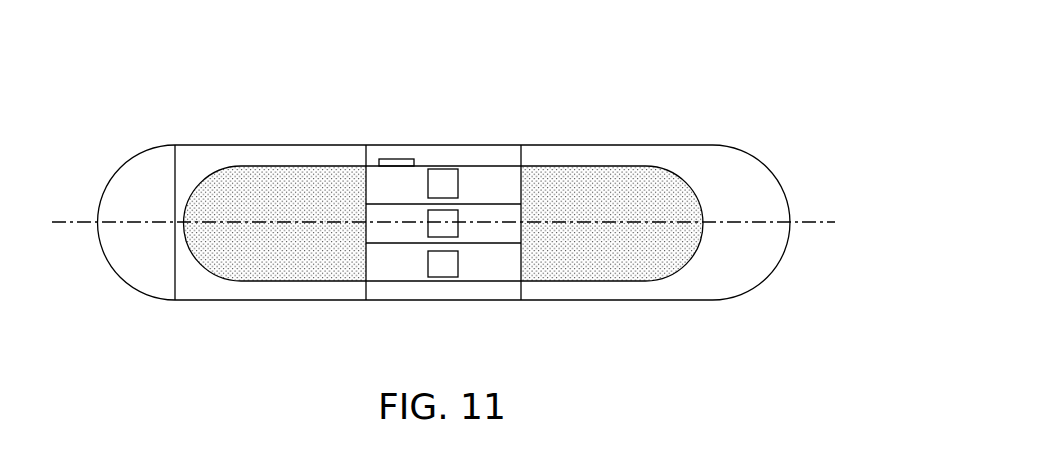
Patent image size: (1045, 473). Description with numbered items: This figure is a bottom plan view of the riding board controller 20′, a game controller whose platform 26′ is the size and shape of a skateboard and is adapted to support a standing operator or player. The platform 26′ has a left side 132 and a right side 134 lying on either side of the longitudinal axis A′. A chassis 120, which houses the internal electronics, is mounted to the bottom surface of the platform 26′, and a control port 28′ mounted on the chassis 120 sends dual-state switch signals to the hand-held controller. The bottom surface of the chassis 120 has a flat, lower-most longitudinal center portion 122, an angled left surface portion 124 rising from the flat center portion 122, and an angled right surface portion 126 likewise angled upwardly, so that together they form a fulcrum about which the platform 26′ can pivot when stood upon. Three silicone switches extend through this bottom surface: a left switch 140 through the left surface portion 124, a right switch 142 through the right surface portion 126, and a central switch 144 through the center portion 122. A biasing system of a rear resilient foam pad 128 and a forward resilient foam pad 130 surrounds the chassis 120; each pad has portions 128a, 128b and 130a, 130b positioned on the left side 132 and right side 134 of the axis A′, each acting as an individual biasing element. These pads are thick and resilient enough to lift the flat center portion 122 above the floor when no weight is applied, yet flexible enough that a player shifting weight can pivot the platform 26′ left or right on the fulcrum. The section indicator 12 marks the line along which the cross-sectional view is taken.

The riding board controller 20′ is at (477, 151).
The axis A′ is at (62, 221).
The platform 26′ is at (146, 152).
The control port 28′ is at (378, 158).
The chassis 120 is at (503, 166).
The flat center portion 122 is at (521, 235).
The left surface portion 124 is at (500, 276).
The right surface portion 126 is at (521, 180).
The rear resilient foam pad 128 is at (299, 166).
The rear pad left portion 128a is at (182, 331).
The rear pad right portion 128b is at (183, 116).
The forward resilient foam pad 130 is at (590, 281).
The forward pad left portion 130a is at (707, 328).
The forward pad right portion 130b is at (698, 116).
The left side 132 is at (846, 308).
The right side 134 is at (847, 137).
The left switch 140 is at (428, 181).
The right switch 142 is at (428, 262).
The central switch 144 is at (458, 214).
The section line 12- 12 is at (417, 226).